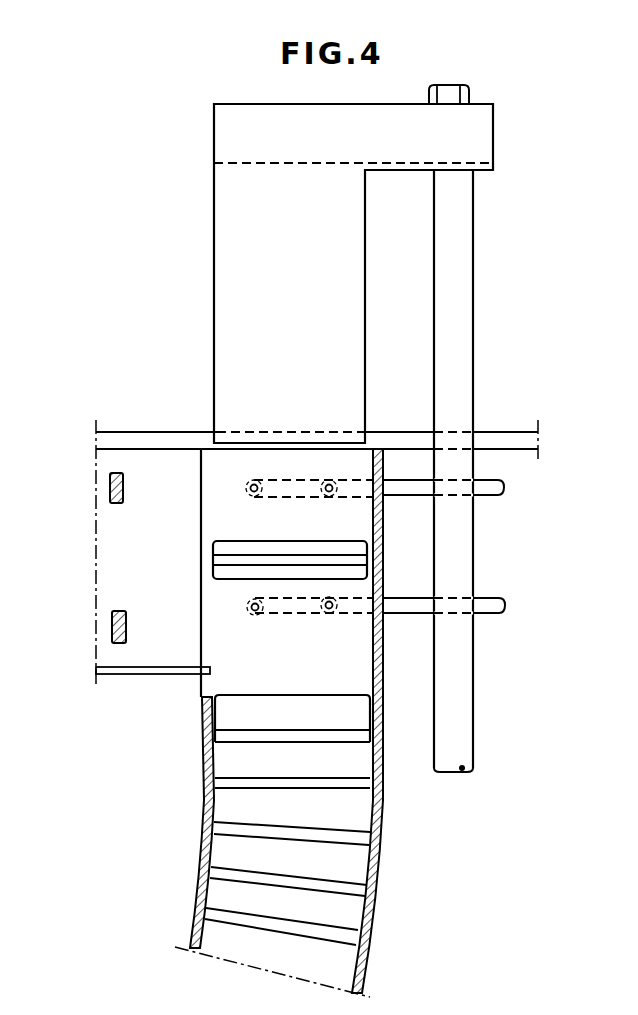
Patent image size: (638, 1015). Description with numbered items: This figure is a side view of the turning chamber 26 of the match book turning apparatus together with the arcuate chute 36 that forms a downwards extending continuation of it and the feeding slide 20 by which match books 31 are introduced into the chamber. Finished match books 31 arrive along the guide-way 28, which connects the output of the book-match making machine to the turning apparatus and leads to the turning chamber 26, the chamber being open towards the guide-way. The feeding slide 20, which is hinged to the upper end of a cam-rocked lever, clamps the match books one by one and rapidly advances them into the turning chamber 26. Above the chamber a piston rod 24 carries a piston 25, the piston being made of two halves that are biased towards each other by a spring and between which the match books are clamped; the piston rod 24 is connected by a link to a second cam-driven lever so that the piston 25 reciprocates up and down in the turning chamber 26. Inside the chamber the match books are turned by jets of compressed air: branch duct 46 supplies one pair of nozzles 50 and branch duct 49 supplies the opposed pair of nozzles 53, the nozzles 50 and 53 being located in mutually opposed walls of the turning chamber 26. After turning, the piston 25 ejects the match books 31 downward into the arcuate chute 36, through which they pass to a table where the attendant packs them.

The feeding slide 20 is at (110, 492).
The piston rod 24 is at (463, 678).
The piston 25 is at (235, 146).
The turning chamber 26 is at (363, 662).
The guide-way 28 is at (147, 675).
The match books 31 is at (232, 549).
The arcuate chute 36 is at (198, 884).
The branch duct 46 is at (500, 490).
The branch duct 49 is at (493, 602).
The nozzles 50 is at (326, 495).
The nozzles 53 is at (326, 612).